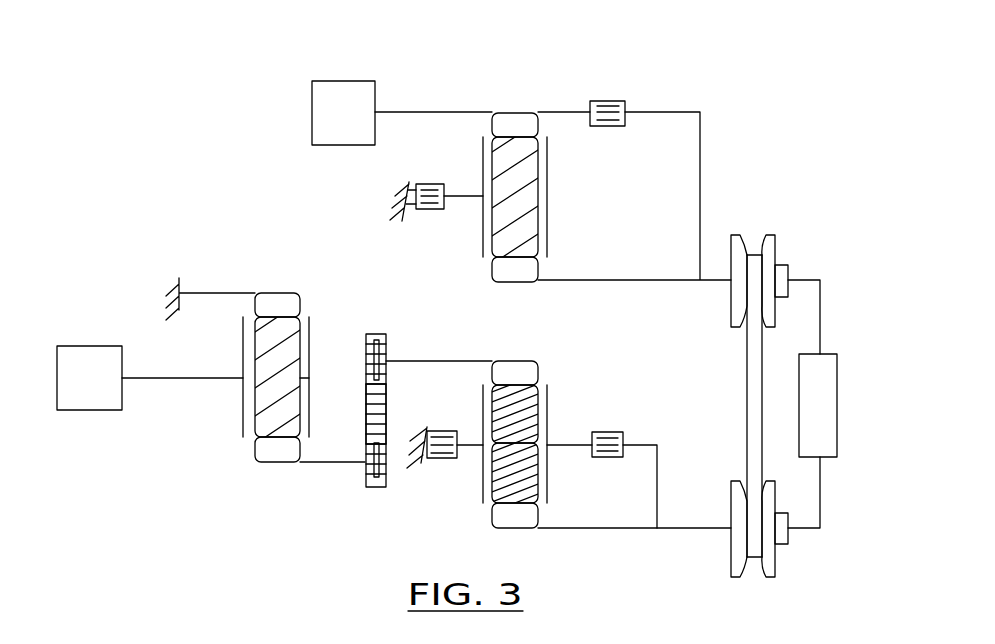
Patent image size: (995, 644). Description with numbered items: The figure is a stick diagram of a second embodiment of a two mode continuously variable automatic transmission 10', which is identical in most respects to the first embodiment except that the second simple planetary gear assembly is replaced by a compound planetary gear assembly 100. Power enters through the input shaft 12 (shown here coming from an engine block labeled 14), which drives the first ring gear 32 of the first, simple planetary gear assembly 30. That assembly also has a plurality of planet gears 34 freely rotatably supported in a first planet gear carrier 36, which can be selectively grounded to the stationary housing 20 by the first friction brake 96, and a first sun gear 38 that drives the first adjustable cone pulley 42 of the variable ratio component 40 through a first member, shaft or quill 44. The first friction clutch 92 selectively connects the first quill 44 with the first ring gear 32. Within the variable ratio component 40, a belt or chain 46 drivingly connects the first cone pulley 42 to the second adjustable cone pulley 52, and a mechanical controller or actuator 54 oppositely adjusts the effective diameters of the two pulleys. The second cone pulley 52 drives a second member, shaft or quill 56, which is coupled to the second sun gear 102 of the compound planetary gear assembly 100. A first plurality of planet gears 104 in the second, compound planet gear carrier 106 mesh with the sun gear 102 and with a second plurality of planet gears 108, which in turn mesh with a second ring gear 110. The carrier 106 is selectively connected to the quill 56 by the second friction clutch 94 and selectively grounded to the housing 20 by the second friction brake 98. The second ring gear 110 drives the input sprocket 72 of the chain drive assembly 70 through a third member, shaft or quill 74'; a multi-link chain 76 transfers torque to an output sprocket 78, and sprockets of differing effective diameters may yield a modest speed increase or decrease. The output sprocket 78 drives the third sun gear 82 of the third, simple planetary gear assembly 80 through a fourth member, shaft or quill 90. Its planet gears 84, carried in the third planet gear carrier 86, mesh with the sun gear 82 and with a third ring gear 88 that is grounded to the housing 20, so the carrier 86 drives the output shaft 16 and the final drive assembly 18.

The automatic transmission 10' is at (463, 325).
The input shaft 12 is at (430, 111).
The engine 14 is at (333, 120).
The output shaft 16 is at (165, 381).
The final drive assembly 18 is at (89, 367).
The stationary housing 20 is at (402, 189).
The first planetary gear assembly 30 is at (572, 216).
The first ring gear 32 is at (517, 122).
The planet gears 34 is at (508, 233).
The first planet gear carrier 36 is at (550, 165).
The first sun gear 38 is at (515, 275).
The variable ratio component 40 is at (788, 222).
The first adjustable cone pulley 42 is at (771, 235).
The first member, shaft or quill 44 is at (667, 282).
The belt or chain 46 is at (751, 368).
The second adjustable cone pulley 52 is at (777, 562).
The mechanical controller or actuator 54 is at (820, 390).
The second member, shaft or quill 56 is at (632, 530).
The chain drive assembly 70 is at (372, 507).
The input sprocket 72 is at (373, 352).
The third member, shaft or quill 74' is at (439, 335).
The multi-link chain 76 is at (373, 398).
The output sprocket 78 is at (386, 477).
The third planetary gear assembly 80 is at (264, 486).
The third sun gear 82 is at (275, 453).
The planet gears 84 is at (275, 413).
The third planet gear carrier 86 is at (311, 327).
The third ring gear 88 is at (277, 303).
The fourth member, shaft or quill 90 is at (345, 468).
The first friction clutch 92 is at (608, 101).
The second friction clutch 94 is at (611, 432).
The first friction brake 96 is at (430, 210).
The second friction brake 98 is at (443, 431).
The compound planetary gear assembly 100 is at (575, 470).
The second sun gear 102 is at (520, 520).
The first plurality of planet gears 104 is at (500, 478).
The second, compound planet gear carrier 106 is at (551, 418).
The second plurality of planet gears 108 is at (530, 400).
The second ring gear 110 is at (524, 372).